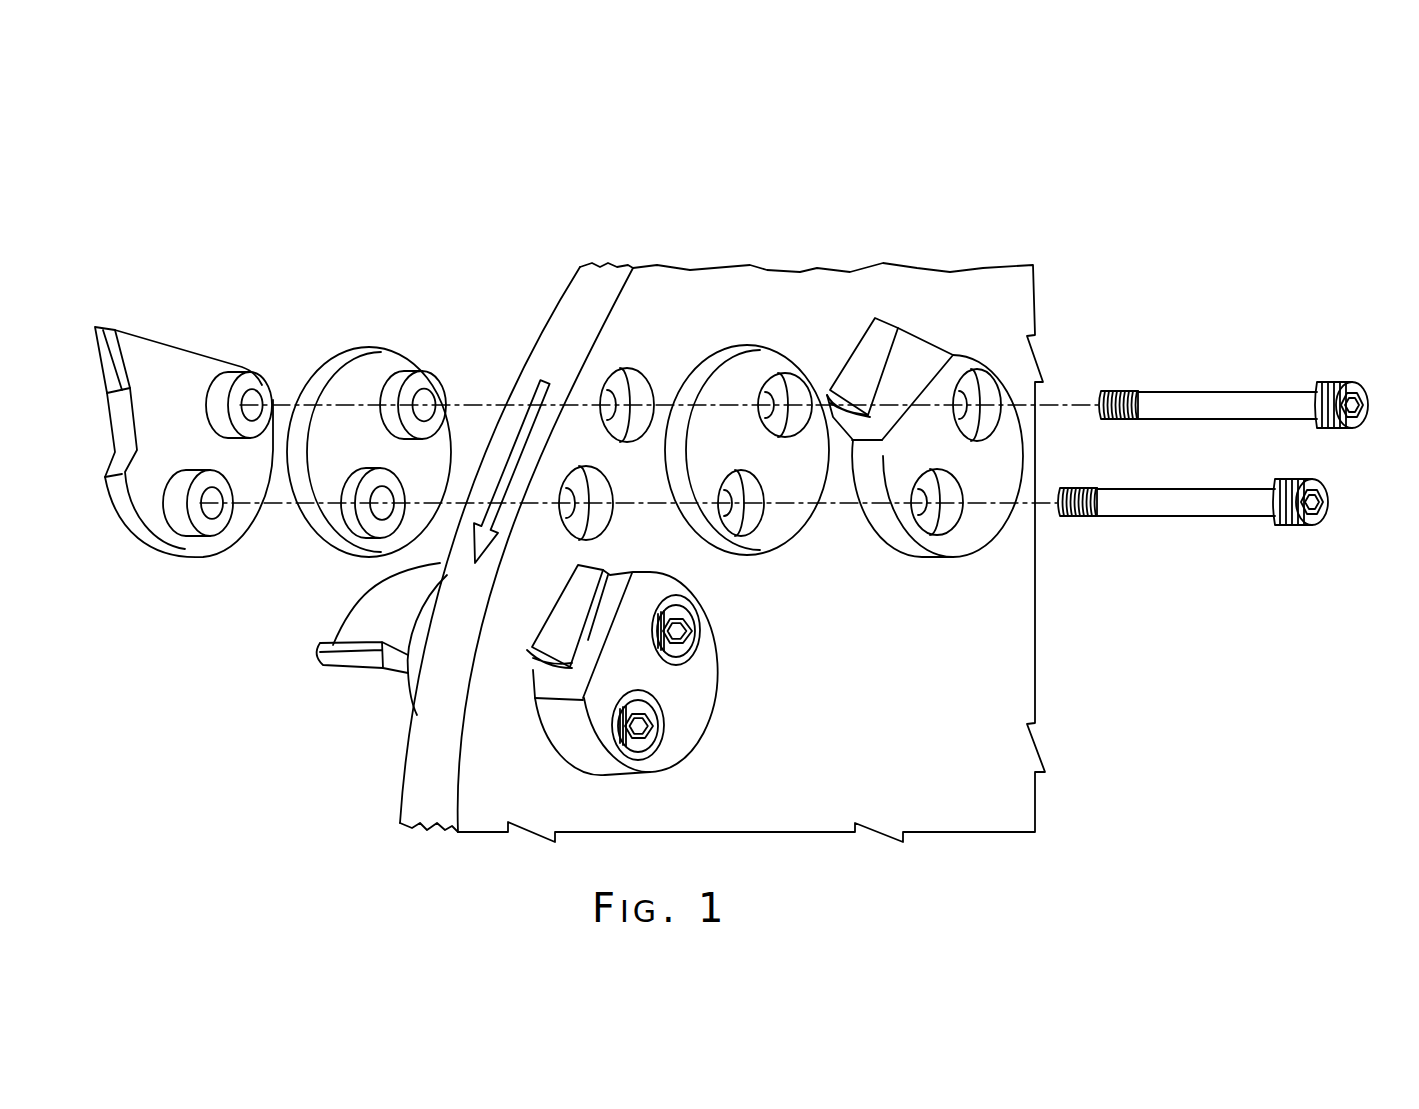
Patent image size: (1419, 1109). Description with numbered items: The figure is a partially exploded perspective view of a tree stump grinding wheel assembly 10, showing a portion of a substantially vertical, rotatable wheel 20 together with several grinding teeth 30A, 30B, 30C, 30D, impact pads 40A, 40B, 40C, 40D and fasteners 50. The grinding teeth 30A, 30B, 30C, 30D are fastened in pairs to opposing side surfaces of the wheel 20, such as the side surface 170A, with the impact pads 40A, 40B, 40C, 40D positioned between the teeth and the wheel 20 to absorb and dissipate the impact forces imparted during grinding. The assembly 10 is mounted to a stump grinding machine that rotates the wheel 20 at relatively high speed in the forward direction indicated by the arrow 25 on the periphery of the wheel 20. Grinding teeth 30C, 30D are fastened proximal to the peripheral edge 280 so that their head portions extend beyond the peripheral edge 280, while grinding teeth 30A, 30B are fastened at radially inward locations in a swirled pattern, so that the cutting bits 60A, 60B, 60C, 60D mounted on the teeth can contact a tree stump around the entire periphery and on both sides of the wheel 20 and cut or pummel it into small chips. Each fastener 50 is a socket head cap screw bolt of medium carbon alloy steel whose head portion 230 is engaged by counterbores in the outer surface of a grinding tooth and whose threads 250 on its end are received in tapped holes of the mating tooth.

The tree stump grinding wheel assembly 10 is at (495, 183).
The wheel 20 is at (708, 283).
The arrow 25 is at (528, 413).
The peripheral edge 280 is at (598, 339).
The side surface 170A is at (866, 616).
The grinding tooth 30A is at (695, 688).
The grinding tooth 30B is at (368, 617).
The grinding tooth 30C is at (1000, 453).
The grinding tooth 30D is at (148, 355).
The impact pad 40A is at (557, 750).
The impact pad 40B is at (408, 657).
The impact pad 40C is at (727, 378).
The impact pad 40D is at (362, 363).
The cutting bit 60A is at (523, 673).
The cutting bit 60B is at (327, 660).
The cutting bit 60C is at (842, 407).
The cutting bit 60D is at (100, 348).
The fastener 50 is at (1242, 397).
The threads 250 is at (1112, 392).
The head portion 230 is at (1335, 385).